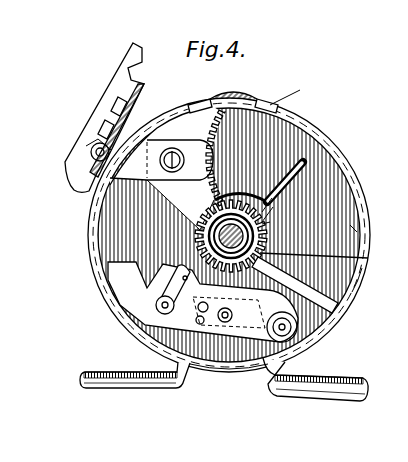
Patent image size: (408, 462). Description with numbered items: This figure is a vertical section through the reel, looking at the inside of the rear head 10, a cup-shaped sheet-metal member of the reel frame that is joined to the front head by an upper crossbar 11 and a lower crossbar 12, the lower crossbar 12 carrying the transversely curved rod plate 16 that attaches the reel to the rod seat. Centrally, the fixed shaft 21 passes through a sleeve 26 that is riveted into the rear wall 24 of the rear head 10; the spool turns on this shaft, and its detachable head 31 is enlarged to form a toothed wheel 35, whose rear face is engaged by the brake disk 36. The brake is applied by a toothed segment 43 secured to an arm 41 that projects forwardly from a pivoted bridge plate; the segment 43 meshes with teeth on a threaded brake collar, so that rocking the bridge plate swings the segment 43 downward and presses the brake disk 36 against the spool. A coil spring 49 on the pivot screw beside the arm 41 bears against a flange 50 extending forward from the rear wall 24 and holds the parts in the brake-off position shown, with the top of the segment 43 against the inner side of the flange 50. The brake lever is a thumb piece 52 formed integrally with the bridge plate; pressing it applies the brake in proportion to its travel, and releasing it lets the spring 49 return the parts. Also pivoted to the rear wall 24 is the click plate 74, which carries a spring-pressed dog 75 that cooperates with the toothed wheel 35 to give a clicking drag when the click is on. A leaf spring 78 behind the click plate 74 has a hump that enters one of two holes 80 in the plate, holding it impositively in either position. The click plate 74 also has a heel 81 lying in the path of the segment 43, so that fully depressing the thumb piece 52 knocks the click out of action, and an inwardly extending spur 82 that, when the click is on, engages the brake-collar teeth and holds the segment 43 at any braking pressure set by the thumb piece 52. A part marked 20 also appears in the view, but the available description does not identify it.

The rear head 10 is at (366, 189).
The upper crossbar 11 is at (250, 96).
The lower crossbar 12 is at (250, 374).
The rod plate 16 is at (155, 389).
The frame segment 20 is at (380, 287).
The shaft 21 is at (272, 195).
The rear wall 24 is at (360, 232).
The sleeve 26 is at (225, 214).
The detachable head 31 is at (262, 224).
The toothed wheel 35 is at (273, 207).
The brake disk 36 is at (368, 259).
The arm 41 is at (133, 173).
The toothed segment 43 is at (210, 128).
The coil spring 49 is at (97, 143).
The flange 50 is at (276, 116).
The thumb piece 52 is at (136, 57).
The click plate 74 is at (166, 332).
The dog 75 is at (183, 283).
The leaf spring 78 is at (295, 285).
The holes 80 is at (229, 378).
The heel 81 is at (120, 277).
The spur 82 is at (207, 236).